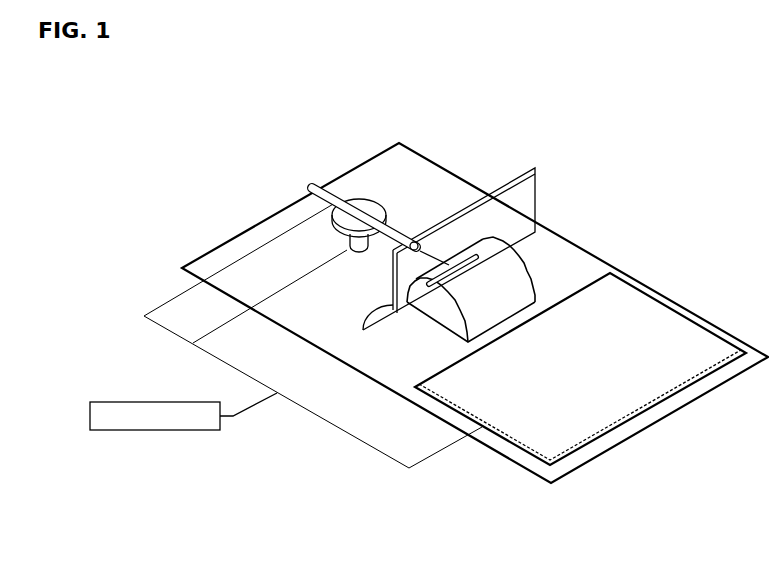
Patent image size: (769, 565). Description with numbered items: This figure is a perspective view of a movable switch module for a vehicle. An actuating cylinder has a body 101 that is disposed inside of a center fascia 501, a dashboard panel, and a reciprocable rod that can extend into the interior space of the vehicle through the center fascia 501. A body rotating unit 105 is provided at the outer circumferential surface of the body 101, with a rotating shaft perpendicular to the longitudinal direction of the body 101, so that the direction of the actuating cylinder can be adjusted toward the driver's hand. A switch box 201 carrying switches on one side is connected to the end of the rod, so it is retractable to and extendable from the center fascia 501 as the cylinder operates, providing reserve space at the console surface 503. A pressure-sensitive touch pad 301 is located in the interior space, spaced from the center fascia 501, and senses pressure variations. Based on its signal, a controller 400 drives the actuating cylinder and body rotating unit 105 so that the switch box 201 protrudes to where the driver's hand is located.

The body 101 is at (331, 196).
The body rotating unit 105 is at (347, 243).
The switch box 201 is at (522, 282).
The pressure-sensitive touch pad 301 is at (675, 322).
The controller 400 is at (155, 432).
The center fascia 501 is at (527, 193).
The console surface 503 is at (423, 163).